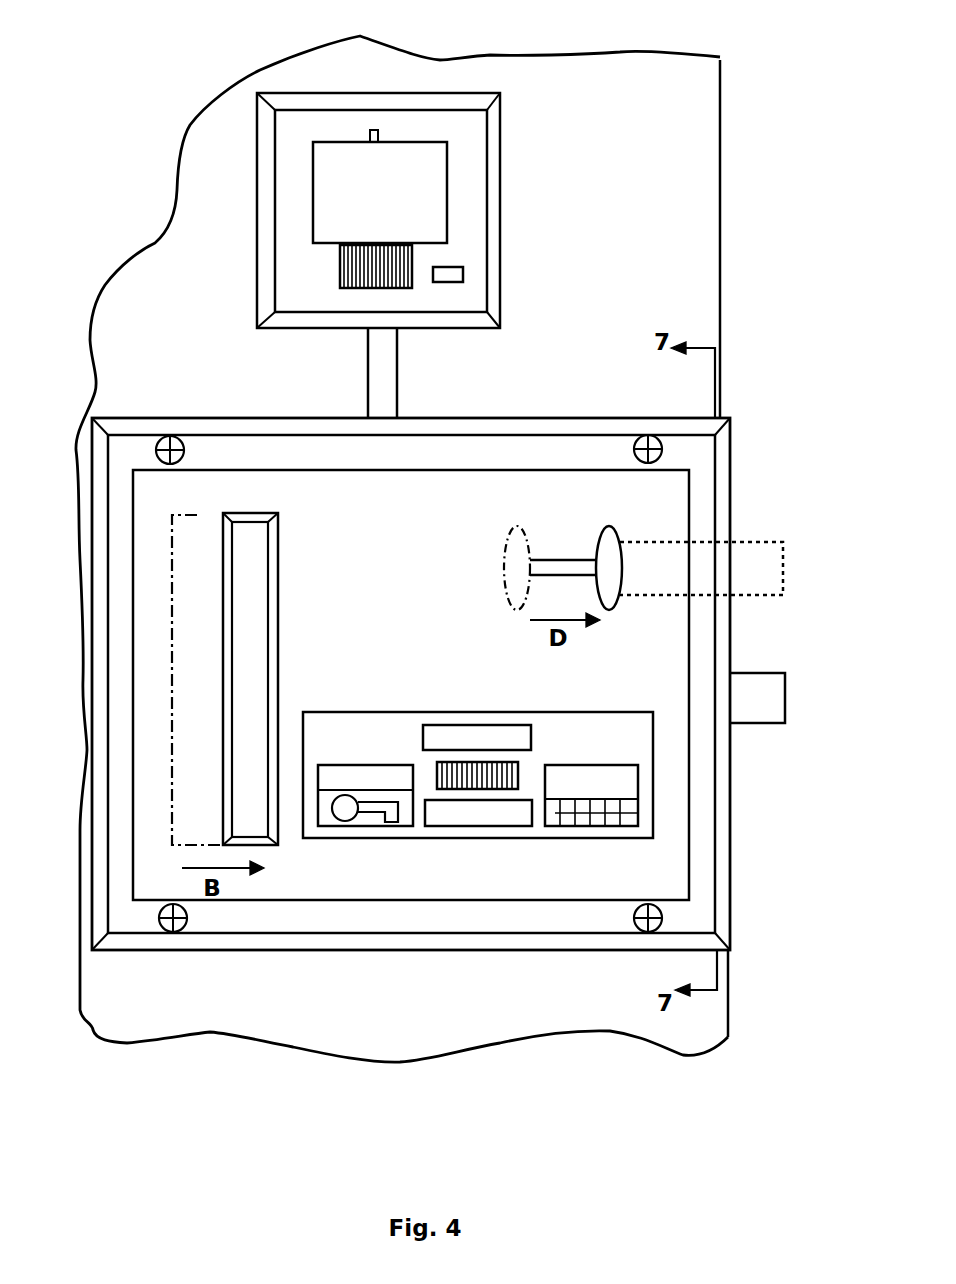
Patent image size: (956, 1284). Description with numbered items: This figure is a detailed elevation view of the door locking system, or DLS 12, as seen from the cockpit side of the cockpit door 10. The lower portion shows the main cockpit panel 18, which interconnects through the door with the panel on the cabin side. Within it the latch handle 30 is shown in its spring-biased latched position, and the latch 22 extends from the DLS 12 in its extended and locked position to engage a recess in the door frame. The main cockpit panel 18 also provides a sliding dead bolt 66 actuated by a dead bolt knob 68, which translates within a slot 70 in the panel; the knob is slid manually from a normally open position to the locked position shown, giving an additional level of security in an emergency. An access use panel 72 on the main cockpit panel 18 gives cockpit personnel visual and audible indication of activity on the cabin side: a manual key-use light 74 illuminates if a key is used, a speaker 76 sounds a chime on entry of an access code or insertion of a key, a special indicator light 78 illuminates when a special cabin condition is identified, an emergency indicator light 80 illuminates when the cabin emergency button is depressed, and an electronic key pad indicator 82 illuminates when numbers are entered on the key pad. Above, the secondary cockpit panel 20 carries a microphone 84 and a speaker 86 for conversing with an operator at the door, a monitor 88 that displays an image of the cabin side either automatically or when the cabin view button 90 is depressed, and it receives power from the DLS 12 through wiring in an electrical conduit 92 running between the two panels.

The cockpit door 10 is at (693, 215).
The DLS 12 is at (765, 283).
The main cockpit panel 18 is at (160, 418).
The secondary cockpit panel 20 is at (490, 198).
The latch 22 is at (757, 708).
The latch handle 30 is at (255, 525).
The sliding dead bolt 66 is at (757, 547).
The dead bolt knob 68 is at (610, 537).
The slot 70 is at (562, 560).
The access use panel 72 is at (353, 712).
The manual key-use light 74 is at (345, 815).
The speaker 76 is at (437, 768).
The special indicator light 78 is at (472, 727).
The emergency indicator light 80 is at (470, 818).
The electronic key pad indicator 82 is at (573, 810).
The microphone 84 is at (378, 135).
The speaker 86 is at (408, 260).
The monitor 88 is at (420, 175).
The cabin view button 90 is at (450, 276).
The electrical conduit 92 is at (385, 390).